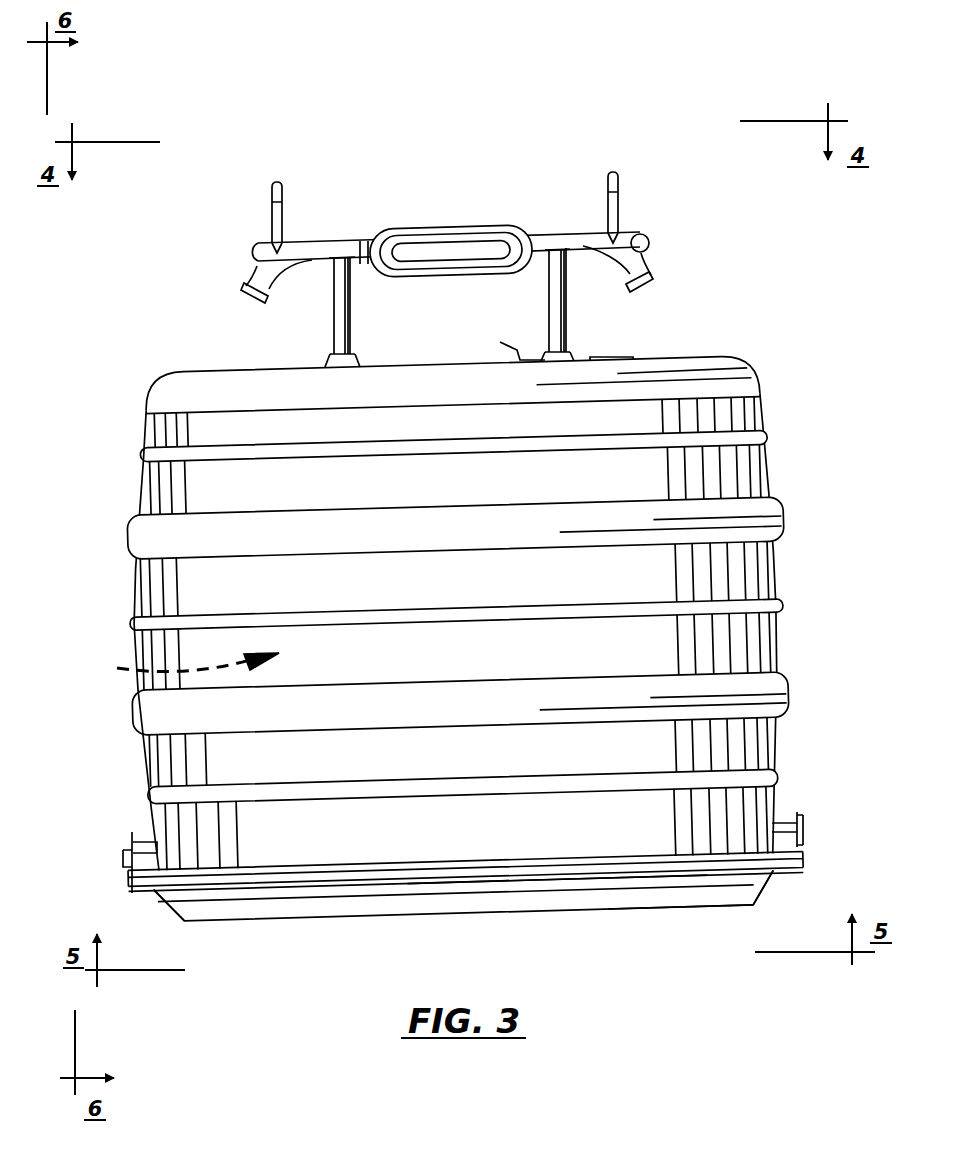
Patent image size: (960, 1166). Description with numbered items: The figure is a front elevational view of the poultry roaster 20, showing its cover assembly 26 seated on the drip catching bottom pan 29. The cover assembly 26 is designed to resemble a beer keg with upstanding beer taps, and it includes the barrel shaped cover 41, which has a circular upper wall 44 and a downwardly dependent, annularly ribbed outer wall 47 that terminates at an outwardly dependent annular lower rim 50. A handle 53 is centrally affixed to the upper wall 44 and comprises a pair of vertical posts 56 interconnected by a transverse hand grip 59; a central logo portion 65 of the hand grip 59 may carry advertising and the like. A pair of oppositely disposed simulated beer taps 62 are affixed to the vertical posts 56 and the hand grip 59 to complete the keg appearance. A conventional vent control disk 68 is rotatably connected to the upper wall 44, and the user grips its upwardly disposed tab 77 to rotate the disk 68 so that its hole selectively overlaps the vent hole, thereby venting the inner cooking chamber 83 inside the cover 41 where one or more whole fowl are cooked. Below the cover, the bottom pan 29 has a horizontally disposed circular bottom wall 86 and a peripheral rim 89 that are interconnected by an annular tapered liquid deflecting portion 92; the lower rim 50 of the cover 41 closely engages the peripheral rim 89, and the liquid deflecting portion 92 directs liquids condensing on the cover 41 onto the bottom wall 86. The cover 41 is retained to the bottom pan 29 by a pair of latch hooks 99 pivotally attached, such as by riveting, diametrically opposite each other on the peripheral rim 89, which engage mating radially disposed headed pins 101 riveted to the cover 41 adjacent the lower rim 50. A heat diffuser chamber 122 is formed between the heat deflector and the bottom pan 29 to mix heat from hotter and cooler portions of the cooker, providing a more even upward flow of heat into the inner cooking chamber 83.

The poultry roaster 20 is at (785, 345).
The cover assembly 26 is at (116, 512).
The bottom pan 29 is at (367, 925).
The cover 41 is at (796, 507).
The upper wall 44 is at (686, 358).
The outer wall 47 is at (198, 582).
The lower rim 50 is at (657, 853).
The handle 53 is at (641, 216).
The vertical posts 56 is at (338, 318).
The hand grip 59 is at (490, 212).
The simulated beer taps 62 is at (250, 250).
The central logo portion 65 is at (428, 235).
The vent control disk 68 is at (622, 350).
The tab 77 is at (516, 347).
The inner cooking chamber 83 is at (179, 666).
The bottom wall 86 is at (656, 912).
The peripheral rim 89 is at (447, 872).
The liquid deflecting portion 92 is at (257, 904).
The latch hooks 99 is at (128, 876).
The headed pins 101 is at (129, 842).
The heat diffuser chamber 122 is at (588, 896).